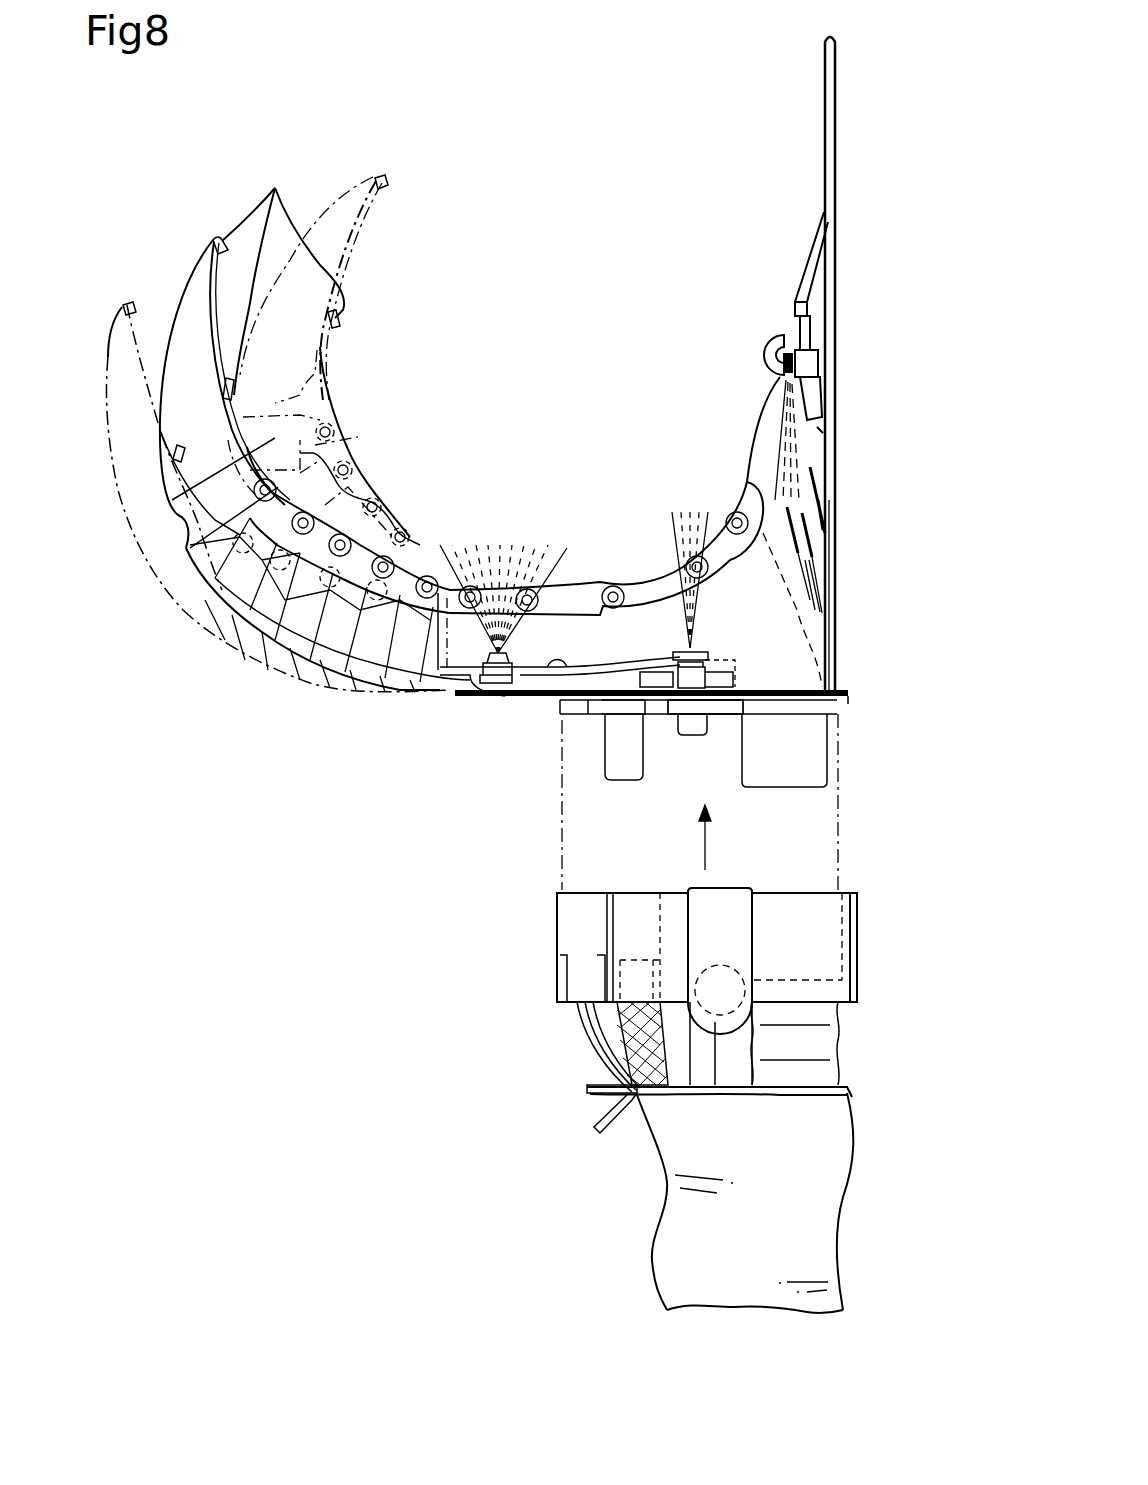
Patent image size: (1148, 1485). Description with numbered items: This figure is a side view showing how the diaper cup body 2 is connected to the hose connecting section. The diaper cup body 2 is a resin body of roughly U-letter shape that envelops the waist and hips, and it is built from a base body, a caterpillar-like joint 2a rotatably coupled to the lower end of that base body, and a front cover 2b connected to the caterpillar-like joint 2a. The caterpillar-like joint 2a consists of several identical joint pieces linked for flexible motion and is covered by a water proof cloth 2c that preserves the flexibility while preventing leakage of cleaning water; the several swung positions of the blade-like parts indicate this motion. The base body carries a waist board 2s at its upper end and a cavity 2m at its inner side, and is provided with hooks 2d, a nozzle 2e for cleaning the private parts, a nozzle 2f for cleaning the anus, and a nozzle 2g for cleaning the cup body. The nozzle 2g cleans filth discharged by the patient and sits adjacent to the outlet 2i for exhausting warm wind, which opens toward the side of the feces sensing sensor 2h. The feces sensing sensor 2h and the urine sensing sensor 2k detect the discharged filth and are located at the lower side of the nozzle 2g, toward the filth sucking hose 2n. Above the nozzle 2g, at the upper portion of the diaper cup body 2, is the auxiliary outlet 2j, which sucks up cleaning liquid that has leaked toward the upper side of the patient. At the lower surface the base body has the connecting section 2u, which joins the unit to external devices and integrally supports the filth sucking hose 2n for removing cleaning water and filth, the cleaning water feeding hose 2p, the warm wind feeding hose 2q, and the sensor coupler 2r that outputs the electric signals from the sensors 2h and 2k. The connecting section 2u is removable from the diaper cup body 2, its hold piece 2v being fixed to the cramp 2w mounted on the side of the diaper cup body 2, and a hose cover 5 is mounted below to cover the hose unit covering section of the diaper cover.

The diaper cup body 2 is at (636, 570).
The caterpillar-like joint 2a is at (255, 640).
The front cover 2b is at (190, 263).
The water proof cloth 2c is at (245, 590).
The hooks 2d is at (605, 590).
The nozzle for cleaning the private parts 2e is at (478, 695).
The nozzle for cleaning the anus 2f is at (683, 645).
The nozzle for cleaning the cup 2g is at (770, 337).
The sensor for sensing feces 2h is at (823, 577).
The outlet for exhausting warm wind 2i is at (766, 375).
The auxiliary outlet 2j is at (795, 305).
The sensor for sensing urine 2k is at (780, 453).
The cavity 2m is at (708, 662).
The filth sucking hose 2n is at (813, 1041).
The cleaning water feeding hose 2p is at (703, 1046).
The warm wind feeding hose 2q is at (613, 1050).
The sensor coupler 2r is at (598, 1010).
The waist board 2s is at (835, 150).
The connecting section 2u is at (552, 938).
The hold piece 2v is at (735, 933).
The cramp 2w is at (713, 702).
The hose cover 5 is at (650, 1248).